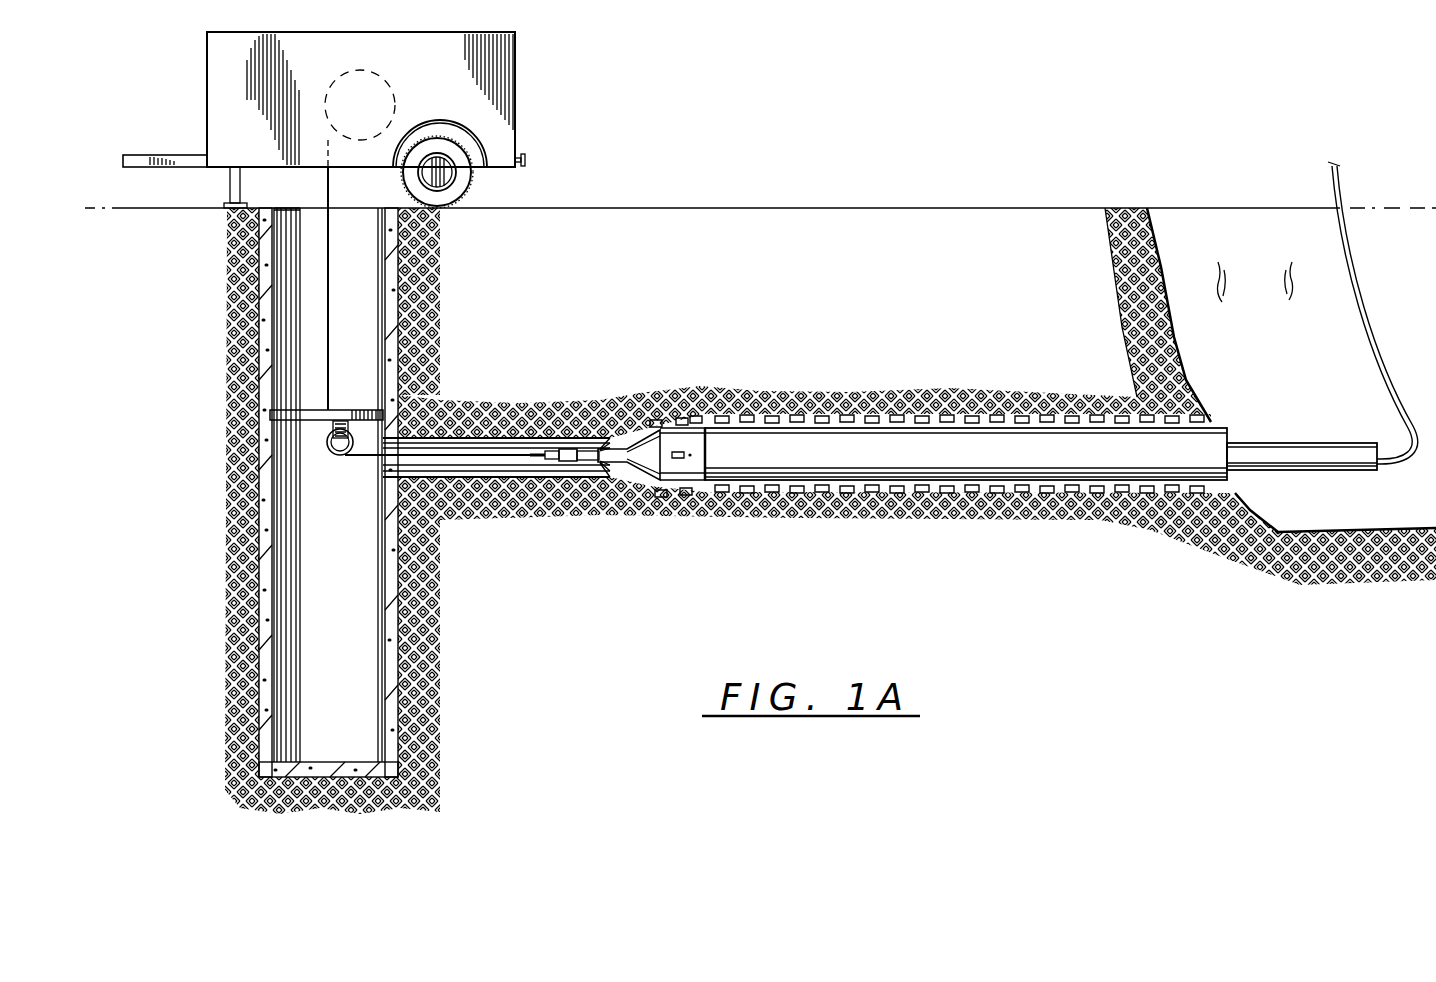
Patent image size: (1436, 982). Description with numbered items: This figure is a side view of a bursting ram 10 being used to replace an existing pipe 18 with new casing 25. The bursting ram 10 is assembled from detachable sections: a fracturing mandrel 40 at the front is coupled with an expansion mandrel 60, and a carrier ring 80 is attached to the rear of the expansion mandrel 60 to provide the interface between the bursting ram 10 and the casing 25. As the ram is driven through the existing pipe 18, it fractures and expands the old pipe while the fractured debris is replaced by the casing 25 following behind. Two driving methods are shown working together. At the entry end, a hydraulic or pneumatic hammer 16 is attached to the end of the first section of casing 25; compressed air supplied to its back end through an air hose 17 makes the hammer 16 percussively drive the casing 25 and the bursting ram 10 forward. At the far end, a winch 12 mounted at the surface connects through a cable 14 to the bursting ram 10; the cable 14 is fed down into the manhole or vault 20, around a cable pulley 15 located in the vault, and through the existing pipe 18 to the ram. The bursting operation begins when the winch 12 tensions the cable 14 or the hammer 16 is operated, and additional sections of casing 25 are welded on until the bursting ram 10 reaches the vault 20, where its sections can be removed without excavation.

The bursting ram 10 is at (800, 508).
The winch 12 is at (515, 78).
The cable 14 is at (327, 356).
The cable pulley 15 is at (293, 416).
The pneumatic hammer 16 is at (1283, 451).
The air hose 17 is at (1356, 324).
The existing pipe 18 is at (520, 438).
The vault 20 is at (303, 306).
The casing 25 is at (880, 440).
The fracturing mandrel 40 is at (621, 479).
The expansion mandrel 60 is at (655, 440).
The carrier ring 80 is at (695, 440).